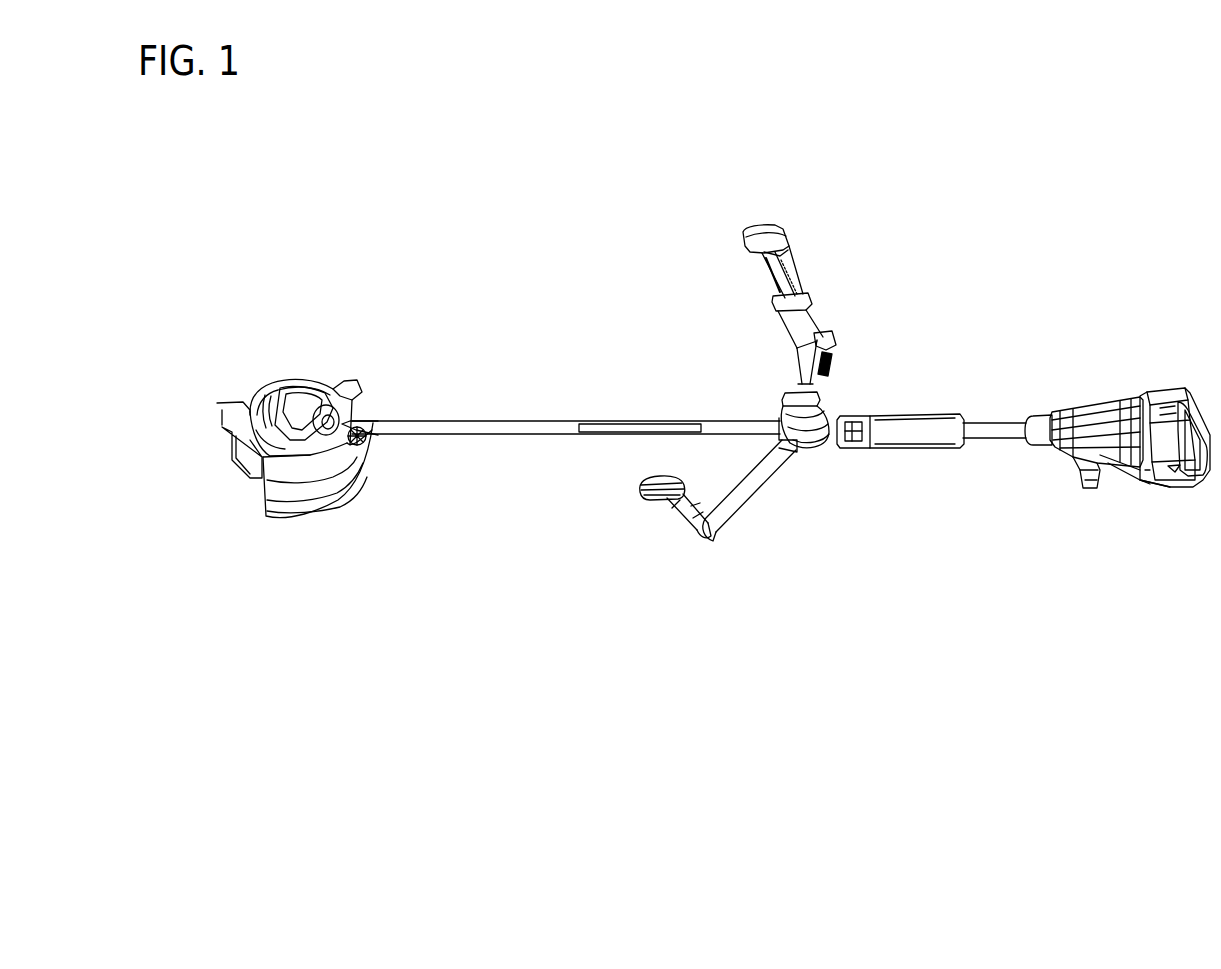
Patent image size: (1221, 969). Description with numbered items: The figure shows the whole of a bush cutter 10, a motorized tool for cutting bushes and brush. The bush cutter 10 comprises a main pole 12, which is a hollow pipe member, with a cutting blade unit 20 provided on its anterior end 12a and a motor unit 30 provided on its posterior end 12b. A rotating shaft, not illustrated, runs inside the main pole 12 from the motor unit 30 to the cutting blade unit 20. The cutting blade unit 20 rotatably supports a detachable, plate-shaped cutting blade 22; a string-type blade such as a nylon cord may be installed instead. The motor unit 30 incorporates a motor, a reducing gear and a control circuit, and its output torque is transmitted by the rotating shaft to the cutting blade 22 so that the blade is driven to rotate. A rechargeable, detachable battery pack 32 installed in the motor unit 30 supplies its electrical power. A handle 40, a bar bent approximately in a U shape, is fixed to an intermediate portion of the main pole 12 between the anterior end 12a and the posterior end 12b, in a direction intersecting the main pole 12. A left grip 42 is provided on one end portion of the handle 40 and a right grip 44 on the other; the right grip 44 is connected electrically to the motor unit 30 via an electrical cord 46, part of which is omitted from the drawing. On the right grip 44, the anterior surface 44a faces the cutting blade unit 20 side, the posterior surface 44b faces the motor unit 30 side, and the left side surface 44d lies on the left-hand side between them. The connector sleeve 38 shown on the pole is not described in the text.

The bush cutter 10 is at (588, 250).
The main pole 12 is at (484, 427).
The anterior end 12a is at (380, 437).
The posterior end 12b is at (1012, 441).
The cutting blade unit 20 is at (316, 388).
The cutting blade 22 is at (232, 398).
The motor unit 30 is at (1110, 404).
The battery pack 32 is at (1173, 392).
The connector sleeve 38 is at (900, 431).
The handle 40 is at (770, 478).
The left grip 42 is at (648, 507).
The right grip 44 is at (781, 210).
The anterior surface 44a is at (770, 283).
The posterior surface 44b is at (798, 280).
The left side surface 44d is at (800, 268).
The electrical cord 46 is at (834, 358).